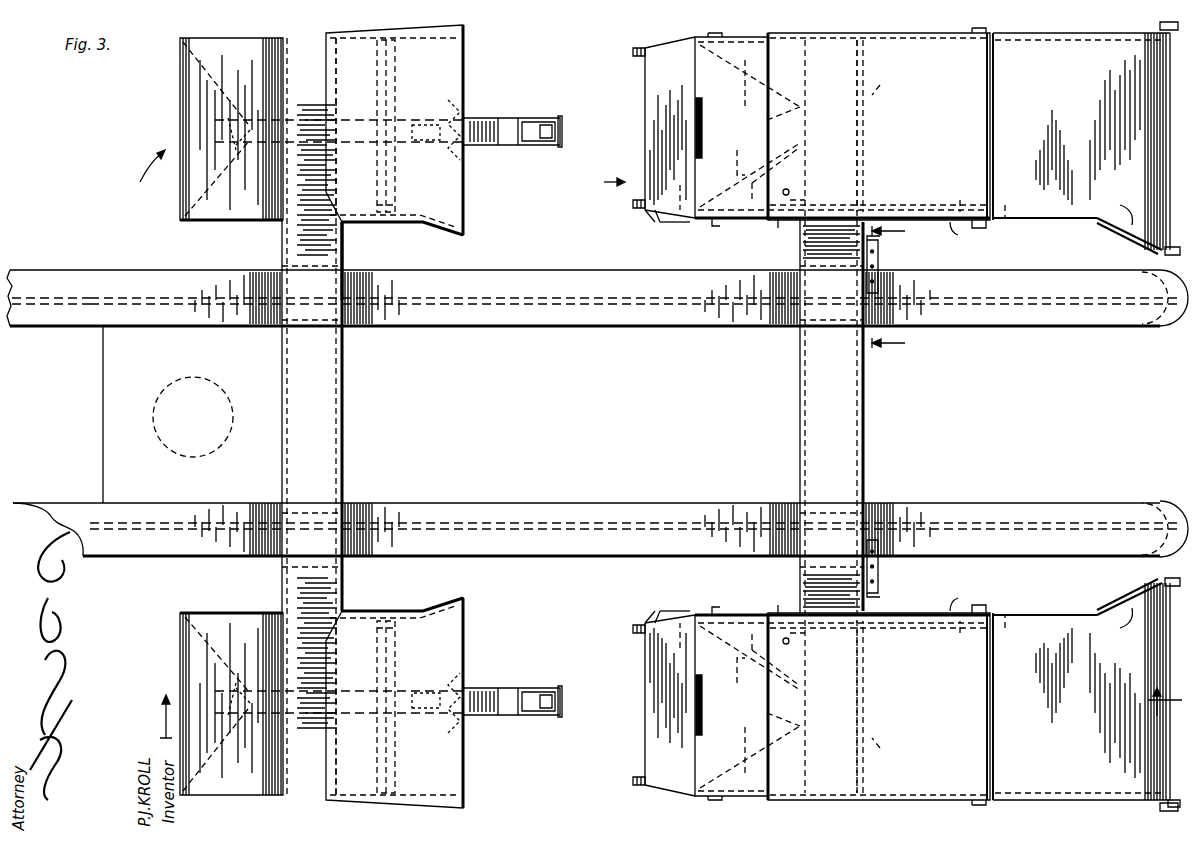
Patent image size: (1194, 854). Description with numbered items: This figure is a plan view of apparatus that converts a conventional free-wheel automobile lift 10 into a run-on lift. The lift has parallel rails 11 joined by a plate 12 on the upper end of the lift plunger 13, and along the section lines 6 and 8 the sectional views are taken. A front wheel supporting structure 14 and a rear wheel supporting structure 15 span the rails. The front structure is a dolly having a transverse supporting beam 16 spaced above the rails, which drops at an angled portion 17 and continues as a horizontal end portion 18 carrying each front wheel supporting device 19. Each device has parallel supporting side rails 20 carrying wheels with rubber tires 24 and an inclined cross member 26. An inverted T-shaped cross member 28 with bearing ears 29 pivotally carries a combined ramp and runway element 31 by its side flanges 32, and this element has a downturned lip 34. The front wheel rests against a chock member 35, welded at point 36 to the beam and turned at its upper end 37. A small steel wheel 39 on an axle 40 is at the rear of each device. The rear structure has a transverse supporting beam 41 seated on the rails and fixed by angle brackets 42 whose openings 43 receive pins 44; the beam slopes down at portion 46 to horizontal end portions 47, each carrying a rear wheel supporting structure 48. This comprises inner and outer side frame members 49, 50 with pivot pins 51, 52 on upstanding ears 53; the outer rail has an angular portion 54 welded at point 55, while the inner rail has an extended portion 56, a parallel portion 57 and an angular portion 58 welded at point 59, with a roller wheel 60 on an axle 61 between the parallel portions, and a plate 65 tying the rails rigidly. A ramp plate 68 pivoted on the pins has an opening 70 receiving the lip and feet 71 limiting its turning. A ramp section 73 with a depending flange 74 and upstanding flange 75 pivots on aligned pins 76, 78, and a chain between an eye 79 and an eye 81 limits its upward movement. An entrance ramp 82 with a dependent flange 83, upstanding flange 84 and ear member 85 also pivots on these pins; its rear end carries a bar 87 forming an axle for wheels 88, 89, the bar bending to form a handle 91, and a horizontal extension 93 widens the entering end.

The section line 6 is at (667, 706).
The section line 8 is at (896, 288).
The free-wheel automobile lift 10 is at (572, 327).
The parallel rails 11 is at (650, 327).
The plate 12 is at (103, 382).
The lift plunger 13 is at (190, 378).
The front wheel supporting structure 14 is at (149, 173).
The rear wheel supporting structure 15 is at (606, 182).
The transverse supporting beam 16 is at (343, 393).
The downwardly angled beam portion 17 is at (343, 252).
The horizontal end portion 18 is at (300, 215).
The front wheel supporting device 19 is at (230, 224).
The supporting side rails 20 is at (352, 118).
The rubber tire 24 is at (425, 693).
The cross member 26 is at (490, 117).
The inverted T-shaped cross member 28 is at (400, 190).
The bearing ears 29 is at (400, 210).
The combined ramp and runway element 31 is at (450, 78).
The side flanges 32 is at (412, 224).
The downturned lip 34 is at (463, 166).
The chock member 35 is at (231, 416).
The weld point 36 is at (288, 86).
The turned upper end of chock 37 is at (180, 128).
The small wheel 39 is at (536, 118).
The axle 40 is at (558, 118).
The transverse supporting beam 41 is at (863, 402).
The angle brackets 42 is at (880, 246).
The openings 43 is at (880, 262).
The pins 44 is at (860, 270).
The downwardly sloping beam portion 46 is at (803, 250).
The horizontal end portion 47 is at (868, 680).
The rear wheel supporting structure 48 is at (953, 416).
The inner side frame member 49 is at (936, 411).
The outer side frame member 50 is at (735, 78).
The pivot pin 51 is at (718, 34).
The pivot pin 52 is at (718, 226).
The upstanding ears 53 is at (735, 605).
The angular rail portion 54 is at (733, 416).
The weld point 55 is at (767, 121).
The extended rail portion 56 is at (656, 222).
The parallel rail portion 57 is at (678, 423).
The angular rail portion 58 is at (750, 416).
The weld point 59 is at (762, 146).
The wheel 60 is at (675, 224).
The axle 61 is at (660, 230).
The plate 65 is at (745, 726).
The ramp plate 68 is at (752, 451).
The opening 70 is at (703, 105).
The feet 71 is at (632, 54).
The ramp section 73 is at (844, 416).
The depending flange 74 is at (915, 40).
The upstanding flange 75 is at (782, 228).
The pivot pin 76 is at (986, 29).
The pivot pin 78 is at (985, 233).
The eye 79 is at (792, 188).
The eye 81 is at (808, 200).
The entrance ramp 82 is at (1088, 416).
The dependent flange 83 is at (1065, 45).
The upstanding flange 84 is at (1040, 216).
The projecting ear member 85 is at (1013, 414).
The bar 87 is at (1168, 803).
The wheel 88 is at (1160, 26).
The wheel 89 is at (1165, 252).
The handle 91 is at (1122, 243).
The horizontal extension 93 is at (1113, 414).